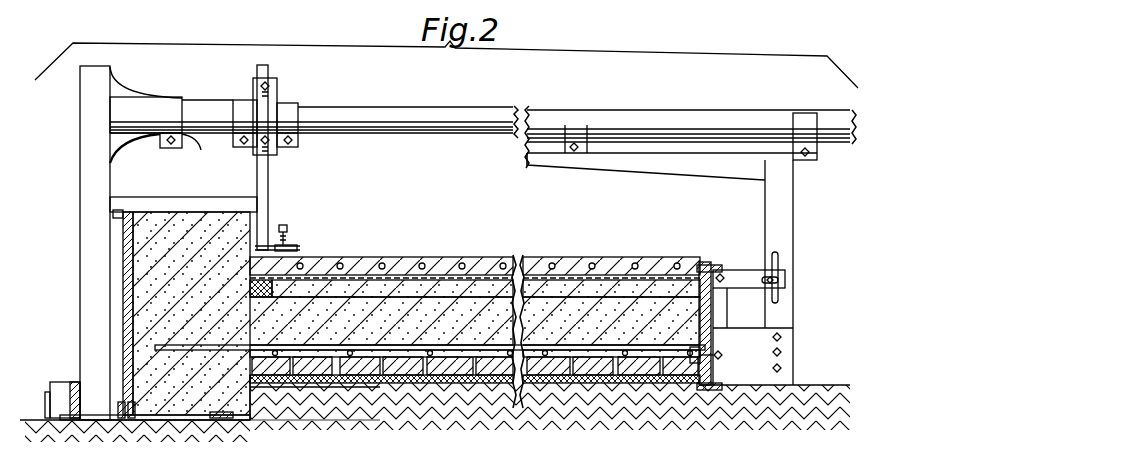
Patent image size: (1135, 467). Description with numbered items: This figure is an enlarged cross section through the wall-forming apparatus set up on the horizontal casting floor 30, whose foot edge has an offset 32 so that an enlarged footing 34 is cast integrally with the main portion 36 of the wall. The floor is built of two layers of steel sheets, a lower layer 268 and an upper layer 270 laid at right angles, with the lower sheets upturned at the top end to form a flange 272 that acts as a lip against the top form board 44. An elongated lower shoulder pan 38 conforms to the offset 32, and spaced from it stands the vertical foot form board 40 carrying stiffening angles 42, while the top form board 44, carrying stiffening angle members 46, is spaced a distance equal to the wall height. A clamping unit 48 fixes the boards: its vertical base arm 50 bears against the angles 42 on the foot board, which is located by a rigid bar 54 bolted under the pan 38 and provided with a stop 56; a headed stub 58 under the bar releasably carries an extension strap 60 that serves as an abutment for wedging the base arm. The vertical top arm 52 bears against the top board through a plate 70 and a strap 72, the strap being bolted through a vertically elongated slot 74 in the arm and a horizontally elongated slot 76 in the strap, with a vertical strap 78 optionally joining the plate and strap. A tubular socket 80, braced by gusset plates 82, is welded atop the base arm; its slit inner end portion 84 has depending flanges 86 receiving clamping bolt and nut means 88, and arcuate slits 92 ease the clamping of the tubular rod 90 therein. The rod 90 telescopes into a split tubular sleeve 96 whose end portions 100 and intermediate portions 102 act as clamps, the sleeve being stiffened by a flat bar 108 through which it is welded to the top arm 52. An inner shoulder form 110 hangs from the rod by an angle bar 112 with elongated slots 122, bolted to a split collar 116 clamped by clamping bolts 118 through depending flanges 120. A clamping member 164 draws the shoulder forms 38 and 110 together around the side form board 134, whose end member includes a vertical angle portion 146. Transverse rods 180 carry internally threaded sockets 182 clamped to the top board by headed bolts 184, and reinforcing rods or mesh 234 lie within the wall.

The casting floor 30 is at (376, 396).
The offset 32 is at (260, 398).
The footing 34 is at (168, 402).
The main portion of the wall 36 is at (455, 305).
The lower shoulder pan 38 is at (252, 423).
The foot form board 40 is at (128, 306).
The stiffening angles 42 is at (118, 211).
The top form board 44 is at (700, 267).
The stiffening angle members 46 is at (715, 265).
The clamping unit 48 is at (484, 94).
The base arm 50 is at (80, 236).
The top arm 52 is at (790, 233).
The rigid bar 54 is at (208, 426).
The stop 56 is at (117, 430).
The headed stub 58 is at (149, 432).
The extension strap 60 is at (72, 434).
The plate 70 is at (785, 363).
The strap 72 is at (750, 284).
The vertically elongated slot 74 is at (781, 263).
The horizontally elongated slot 76 is at (765, 277).
The vertically extending strap 78 is at (724, 319).
The tubular socket 80 is at (158, 94).
The gusset plates 82 is at (121, 82).
The inner end portion of the socket 84 is at (172, 110).
The flanges 86 is at (198, 150).
The clamping bolt and nut means 88 is at (170, 149).
The tubular rod 90 is at (372, 112).
The arcuate slits 92 is at (160, 125).
The tubular sleeve 96 is at (670, 120).
The end portions of the sleeve 100 is at (805, 125).
The intermediate clamping portions 102 is at (569, 132).
The flat bar 108 is at (575, 166).
The inner shoulder form 110 is at (259, 236).
The angle bar 112 is at (270, 188).
The collar 116 is at (290, 104).
The clamping bolts 118 is at (298, 145).
The depending flanges 120 is at (238, 148).
The elongated slots 122 is at (272, 85).
The side form board 134 is at (688, 466).
The vertically orientated angle portion 146 is at (777, 459).
The clamping member 164 is at (294, 248).
The transversely extending rods 180 is at (402, 337).
The internally threaded sockets 182 is at (668, 385).
The headed bolts 184 is at (714, 360).
The rods or mesh 234 is at (550, 265).
The lower layer of sheets 268 is at (582, 392).
The upper layer of sheets 270 is at (385, 395).
The flange 272 is at (728, 388).